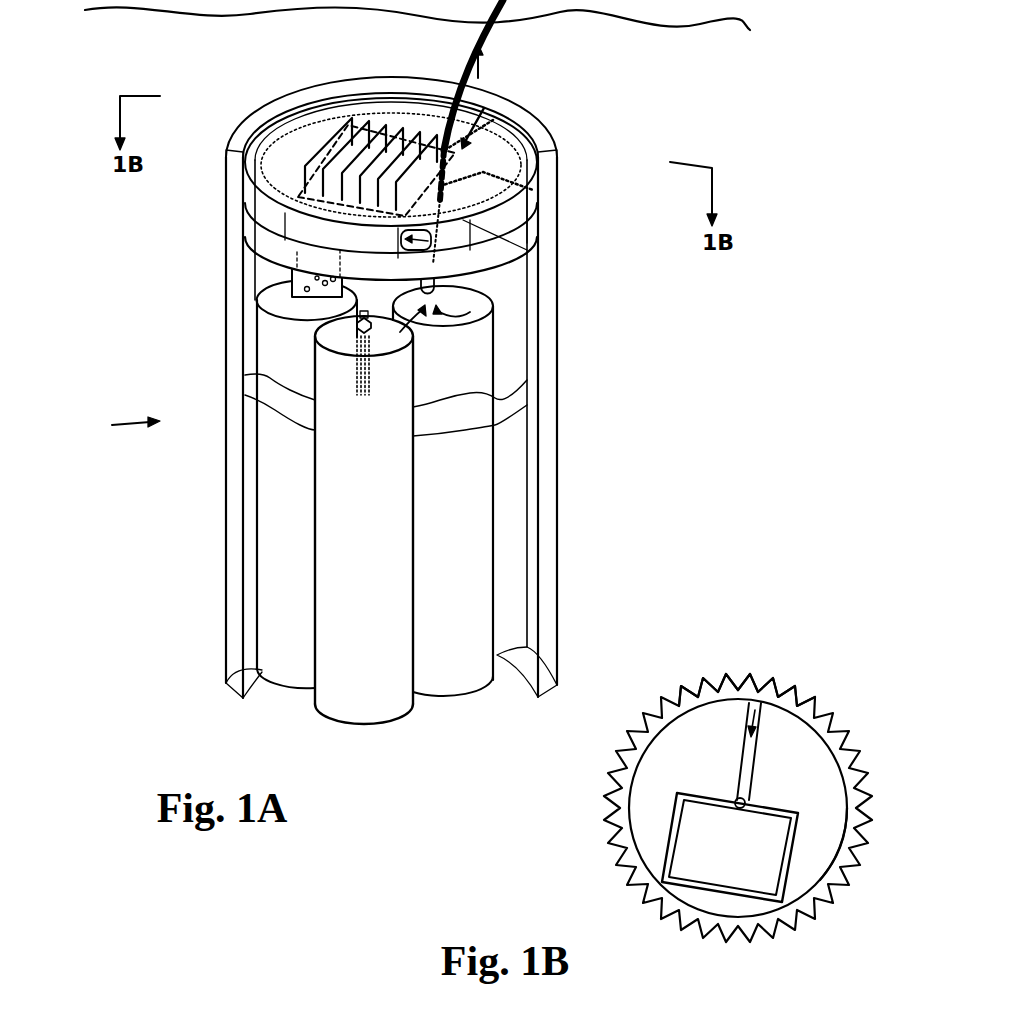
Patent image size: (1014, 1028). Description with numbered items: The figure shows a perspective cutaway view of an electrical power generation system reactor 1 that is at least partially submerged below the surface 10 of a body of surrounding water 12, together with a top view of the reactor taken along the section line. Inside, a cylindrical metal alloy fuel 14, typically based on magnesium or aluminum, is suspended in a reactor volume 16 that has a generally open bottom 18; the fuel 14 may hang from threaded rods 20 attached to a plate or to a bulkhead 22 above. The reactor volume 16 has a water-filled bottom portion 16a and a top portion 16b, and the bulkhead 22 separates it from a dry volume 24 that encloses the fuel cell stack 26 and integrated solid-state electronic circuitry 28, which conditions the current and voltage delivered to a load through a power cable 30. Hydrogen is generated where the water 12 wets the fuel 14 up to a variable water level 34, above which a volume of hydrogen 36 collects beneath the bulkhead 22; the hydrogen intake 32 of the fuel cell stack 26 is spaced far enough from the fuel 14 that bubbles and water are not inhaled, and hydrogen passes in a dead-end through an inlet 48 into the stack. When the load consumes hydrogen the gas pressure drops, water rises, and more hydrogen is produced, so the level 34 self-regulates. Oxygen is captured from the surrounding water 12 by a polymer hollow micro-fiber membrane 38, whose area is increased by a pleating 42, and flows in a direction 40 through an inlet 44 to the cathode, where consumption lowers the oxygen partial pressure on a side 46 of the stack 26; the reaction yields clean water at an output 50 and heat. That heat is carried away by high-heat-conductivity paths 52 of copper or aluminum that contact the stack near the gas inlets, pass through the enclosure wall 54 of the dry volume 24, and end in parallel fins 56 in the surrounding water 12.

In FIG. 1A, the system reactor 1 is at (123, 427).
In FIG. 1A, the surface 10 is at (193, 17).
In FIG. 1A, the surrounding water 12 is at (113, 572).
In FIG. 1A, the metal alloy fuel 14 is at (363, 690).
In FIG. 1A, the reactor volume 16 is at (534, 519).
In FIG. 1A, the bottom portion 16a is at (258, 517).
In FIG. 1A, the top portion 16b is at (253, 295).
In FIG. 1A, the open bottom 18 is at (523, 693).
In FIG. 1A, the threaded rods 20 is at (357, 377).
In FIG. 1A, the bulkhead 22 is at (262, 235).
In FIG. 1A, the dry volume 24 is at (257, 203).
In FIG. 1A, the fuel cell stack 26 is at (307, 230).
In FIG. 1B, the fuel cell stack 26 is at (757, 858).
In FIG. 1A, the solid-state electronic circuitry 28 is at (515, 212).
In FIG. 1A, the power cable 30 is at (470, 44).
In FIG. 1A, the hydrogen intake 32 is at (434, 290).
In FIG. 1A, the water level 34 is at (500, 410).
In FIG. 1A, the volume of hydrogen 36 is at (446, 330).
In FIG. 1A, the membrane 38 is at (510, 102).
In FIG. 1B, the membrane 38 is at (617, 818).
In FIG. 1B, the direction 40 is at (868, 790).
In FIG. 1B, the pleating 42 is at (713, 683).
In FIG. 1A, the inlet 44 is at (494, 128).
In FIG. 1B, the inlet 44 is at (753, 757).
In FIG. 1B, the side 46 is at (842, 857).
In FIG. 1A, the inlet 48 is at (432, 242).
In FIG. 1A, the output 50 is at (318, 292).
In FIG. 1A, the high-heat-conductivity paths 52 is at (287, 207).
In FIG. 1A, the enclosure wall 54 is at (537, 190).
In FIG. 1A, the parallel fins 56 is at (337, 133).